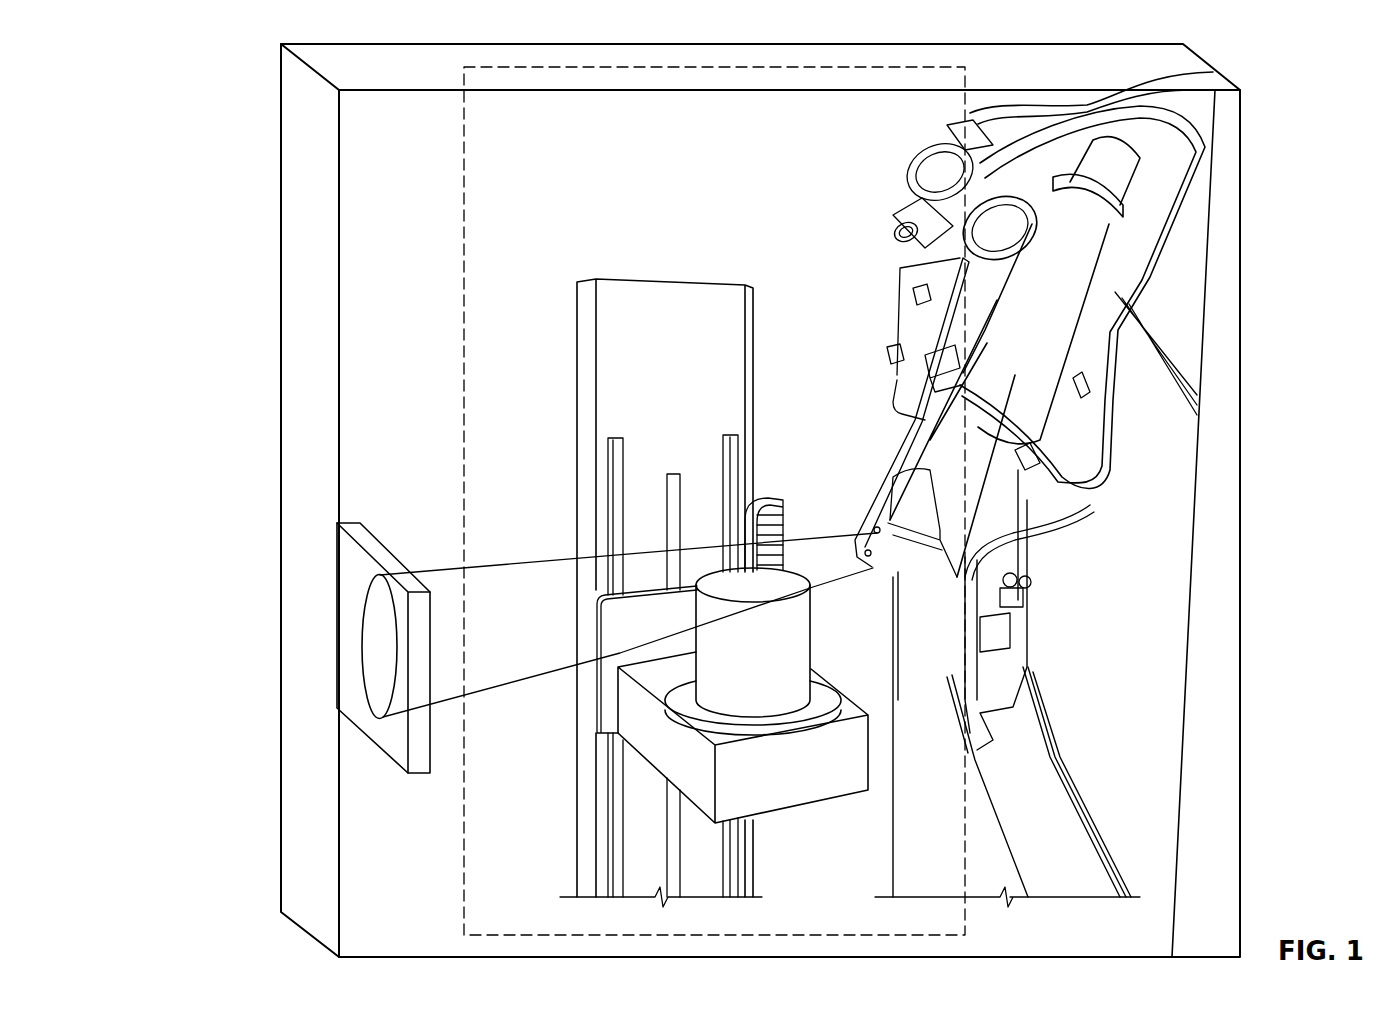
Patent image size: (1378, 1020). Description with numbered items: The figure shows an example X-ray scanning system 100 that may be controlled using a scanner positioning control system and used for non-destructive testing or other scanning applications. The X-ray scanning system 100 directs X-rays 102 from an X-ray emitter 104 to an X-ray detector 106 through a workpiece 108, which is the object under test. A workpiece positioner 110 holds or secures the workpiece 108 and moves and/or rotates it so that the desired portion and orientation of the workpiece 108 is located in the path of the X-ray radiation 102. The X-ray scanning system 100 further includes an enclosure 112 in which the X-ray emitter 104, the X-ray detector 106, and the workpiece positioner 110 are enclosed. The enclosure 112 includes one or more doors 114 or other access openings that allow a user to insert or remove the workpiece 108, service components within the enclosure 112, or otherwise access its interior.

The X-ray scanning system 100 is at (238, 89).
The X-rays 102 is at (590, 558).
The X-ray emitter 104 is at (908, 492).
The X-ray detector 106 is at (368, 544).
The workpiece 108 is at (780, 590).
The workpiece positioner 110 is at (680, 697).
The enclosure 112 is at (281, 283).
The door 114 is at (463, 258).